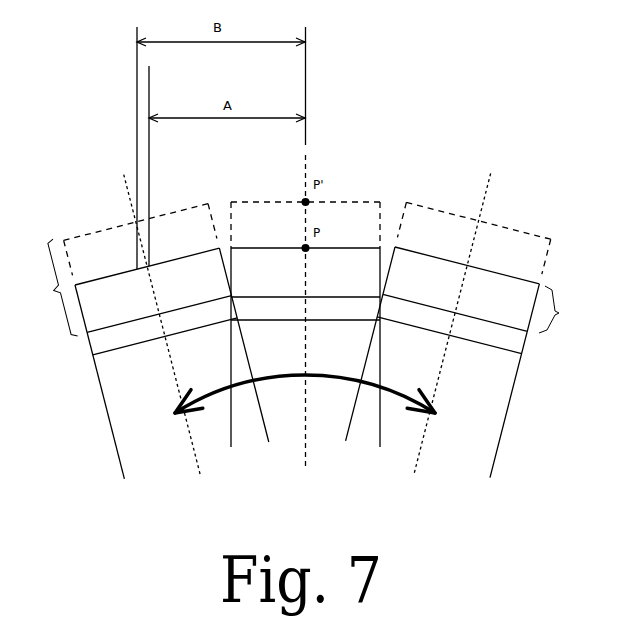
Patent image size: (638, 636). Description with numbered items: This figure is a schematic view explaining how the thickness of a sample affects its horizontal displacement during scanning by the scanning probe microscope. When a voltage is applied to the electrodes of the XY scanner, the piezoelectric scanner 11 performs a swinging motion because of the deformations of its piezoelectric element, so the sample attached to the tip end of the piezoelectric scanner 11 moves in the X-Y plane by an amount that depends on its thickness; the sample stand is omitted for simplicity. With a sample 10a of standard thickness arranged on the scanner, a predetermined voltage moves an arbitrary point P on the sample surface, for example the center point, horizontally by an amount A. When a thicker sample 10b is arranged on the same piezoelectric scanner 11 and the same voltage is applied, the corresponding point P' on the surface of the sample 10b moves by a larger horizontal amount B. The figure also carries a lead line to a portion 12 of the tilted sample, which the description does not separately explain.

The first magnet segment 10a is at (464, 323).
The second magnet segment 10b is at (141, 327).
The magnet assembly 11 is at (543, 408).
The magnet segment edge 12 is at (90, 343).